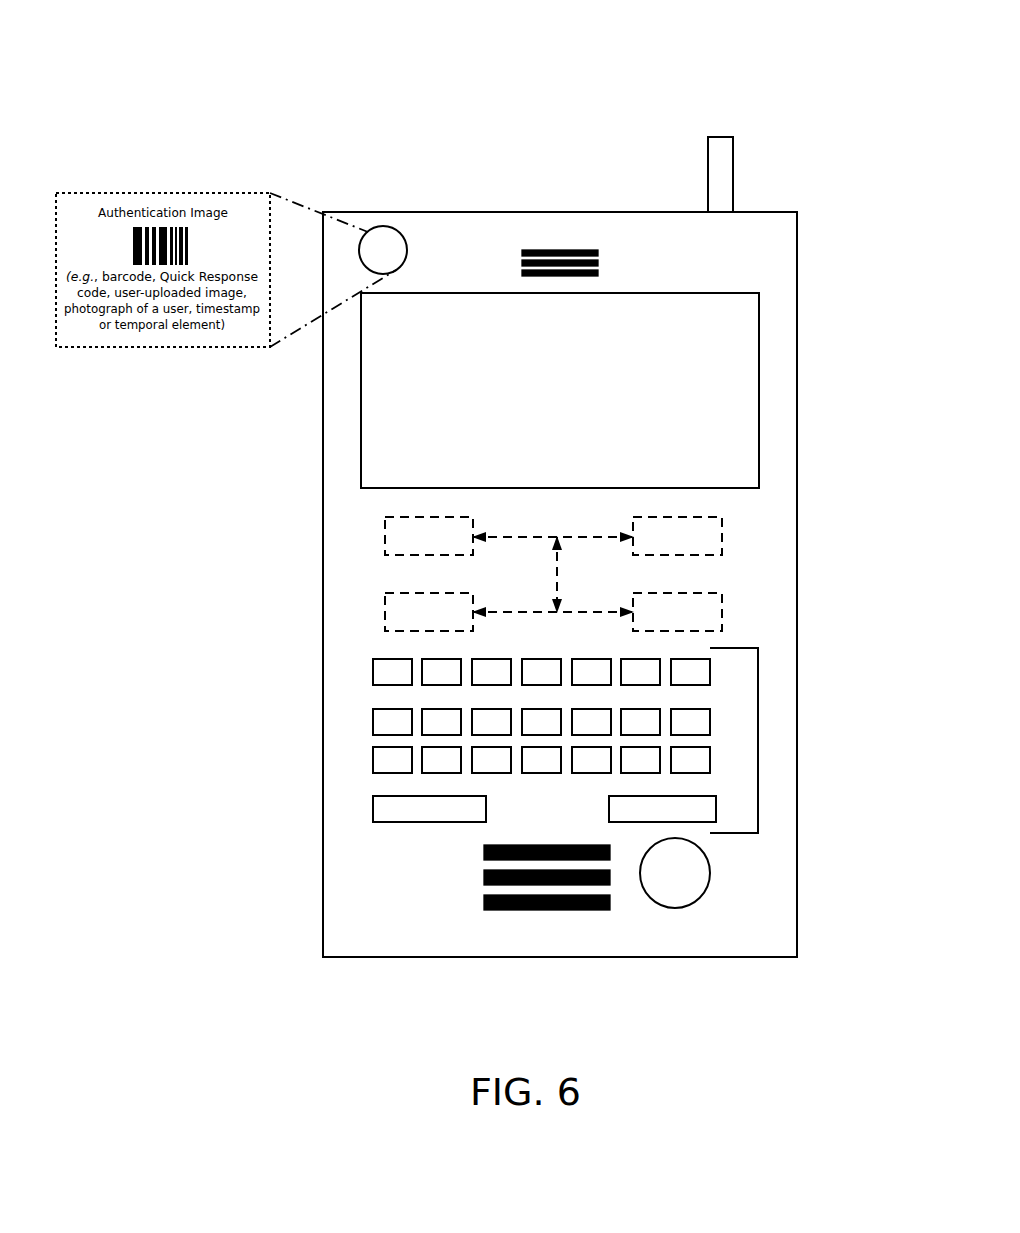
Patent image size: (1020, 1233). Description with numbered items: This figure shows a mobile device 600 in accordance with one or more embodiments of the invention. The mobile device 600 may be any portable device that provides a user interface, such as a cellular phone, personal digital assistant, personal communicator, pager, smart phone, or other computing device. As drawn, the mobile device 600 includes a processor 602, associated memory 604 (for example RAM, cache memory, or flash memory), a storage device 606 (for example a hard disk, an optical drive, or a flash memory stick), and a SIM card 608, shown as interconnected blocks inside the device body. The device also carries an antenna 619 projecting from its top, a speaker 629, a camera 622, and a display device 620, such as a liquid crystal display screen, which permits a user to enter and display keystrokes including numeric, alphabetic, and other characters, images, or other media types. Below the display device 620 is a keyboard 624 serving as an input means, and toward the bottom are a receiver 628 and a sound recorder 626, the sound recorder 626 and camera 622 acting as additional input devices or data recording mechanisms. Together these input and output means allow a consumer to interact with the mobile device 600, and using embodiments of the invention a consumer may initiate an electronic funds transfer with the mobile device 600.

The mobile device 600 is at (620, 88).
The antenna 619 is at (722, 175).
The display device 620 is at (733, 423).
The camera 622 is at (407, 235).
The speaker 629 is at (562, 247).
The processor 602 is at (383, 537).
The storage device 606 is at (383, 612).
The SIM card 608 is at (725, 535).
The memory 604 is at (724, 612).
The keyboard 624 is at (762, 733).
The sound recorder 626 is at (678, 873).
The receiver 628 is at (546, 910).